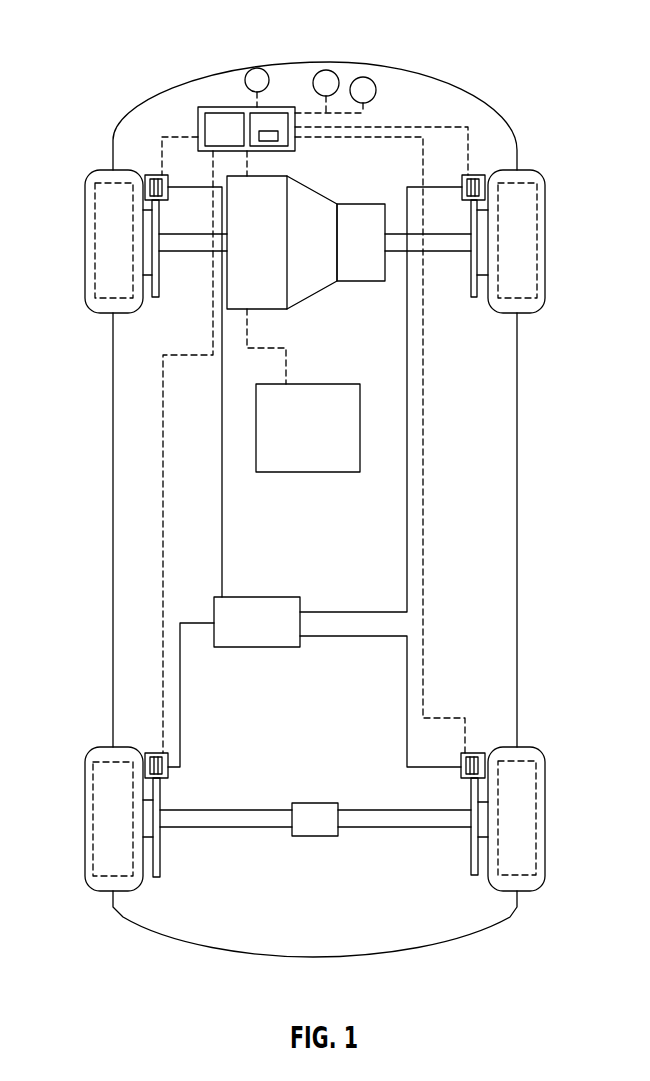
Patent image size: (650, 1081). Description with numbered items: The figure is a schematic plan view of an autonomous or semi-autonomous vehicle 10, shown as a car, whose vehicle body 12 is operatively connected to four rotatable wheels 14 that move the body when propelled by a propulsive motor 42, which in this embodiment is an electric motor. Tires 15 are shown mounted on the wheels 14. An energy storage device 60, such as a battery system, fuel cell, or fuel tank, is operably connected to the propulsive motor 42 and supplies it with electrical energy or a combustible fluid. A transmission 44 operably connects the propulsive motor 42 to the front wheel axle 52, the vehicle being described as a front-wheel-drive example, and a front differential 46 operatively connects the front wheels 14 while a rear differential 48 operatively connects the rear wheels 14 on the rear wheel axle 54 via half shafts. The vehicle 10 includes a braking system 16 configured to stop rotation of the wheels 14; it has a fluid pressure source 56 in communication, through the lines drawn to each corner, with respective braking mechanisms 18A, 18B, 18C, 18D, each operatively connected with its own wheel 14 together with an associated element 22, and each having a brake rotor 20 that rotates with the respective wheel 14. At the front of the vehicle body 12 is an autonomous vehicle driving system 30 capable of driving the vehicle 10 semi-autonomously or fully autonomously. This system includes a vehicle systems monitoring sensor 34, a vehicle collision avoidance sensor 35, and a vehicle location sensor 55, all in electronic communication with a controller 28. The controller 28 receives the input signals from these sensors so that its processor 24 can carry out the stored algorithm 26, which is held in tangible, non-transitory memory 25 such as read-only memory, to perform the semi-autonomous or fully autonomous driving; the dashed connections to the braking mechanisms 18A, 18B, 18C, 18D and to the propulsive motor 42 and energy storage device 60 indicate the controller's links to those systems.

The vehicle 10 is at (123, 86).
The vehicle body 12 is at (518, 134).
The rotatable wheels 14 is at (95, 188).
The tires 15 is at (85, 240).
The braking system 16 is at (285, 590).
The braking mechanism 18A is at (148, 174).
The braking mechanism 18B is at (480, 174).
The braking mechanism 18C is at (193, 765).
The braking mechanism 18D is at (478, 752).
The brake rotor 20 is at (125, 313).
The brake 22 is at (157, 200).
The processor 24 is at (199, 137).
The memory 25 is at (267, 113).
The stored algorithm 26 is at (270, 142).
The controller 28 is at (243, 107).
The autonomous vehicle driving system 30 is at (193, 53).
The vehicle systems monitoring sensor 34 is at (258, 68).
The vehicle collision avoidance sensor 35 is at (335, 70).
The propulsive motor 42 is at (267, 255).
The transmission 44 is at (324, 255).
The front differential 46 is at (373, 255).
The rear differential 48 is at (328, 835).
The front wheel axle 52 is at (173, 243).
The rear wheel axle 54 is at (228, 827).
The vehicle location sensor 55 is at (377, 90).
The fluid pressure source 56 is at (270, 637).
The energy storage device 60 is at (322, 447).